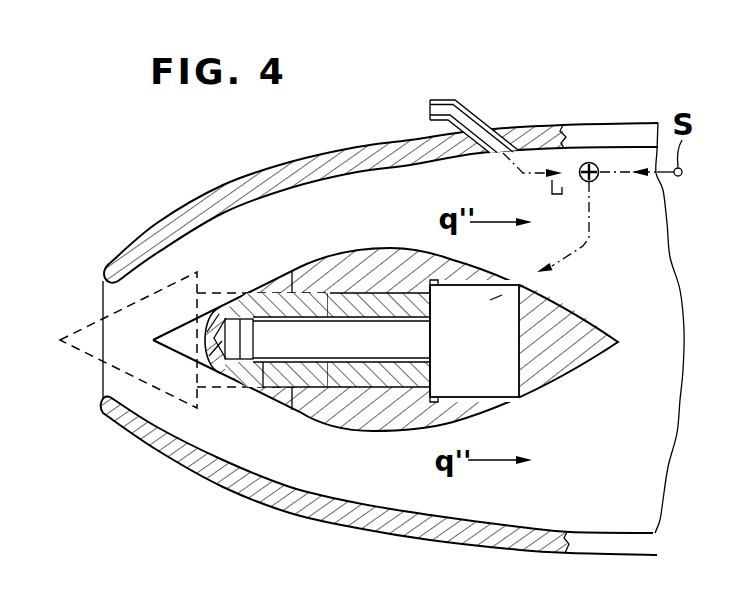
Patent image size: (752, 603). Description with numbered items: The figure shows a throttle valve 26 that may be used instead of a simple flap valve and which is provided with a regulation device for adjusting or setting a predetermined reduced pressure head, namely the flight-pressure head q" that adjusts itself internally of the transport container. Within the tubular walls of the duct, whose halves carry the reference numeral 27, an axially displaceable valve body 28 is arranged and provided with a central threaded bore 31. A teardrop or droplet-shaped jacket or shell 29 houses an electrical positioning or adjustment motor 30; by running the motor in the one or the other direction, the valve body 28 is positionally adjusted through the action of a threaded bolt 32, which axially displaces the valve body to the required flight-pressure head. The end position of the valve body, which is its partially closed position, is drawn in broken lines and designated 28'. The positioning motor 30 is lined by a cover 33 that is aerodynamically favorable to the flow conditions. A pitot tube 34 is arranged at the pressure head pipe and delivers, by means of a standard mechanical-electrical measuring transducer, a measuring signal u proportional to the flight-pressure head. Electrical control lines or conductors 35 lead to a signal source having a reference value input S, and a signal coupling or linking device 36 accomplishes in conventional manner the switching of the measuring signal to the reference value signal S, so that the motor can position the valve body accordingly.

The throttle valve 26 is at (86, 139).
The skin shell halves 27 is at (125, 254).
The valve body 28 is at (318, 296).
The end position of the valve body 28' is at (195, 286).
The jacket or shell 29 is at (348, 262).
The positioning motor 30 is at (472, 370).
The threaded bore 31 is at (263, 387).
The threaded bolt 32 is at (335, 345).
The cover 33 is at (547, 377).
The pitot tube 34 is at (452, 110).
The electrical control lines 35 is at (590, 221).
The signal coupling device 36 is at (589, 162).